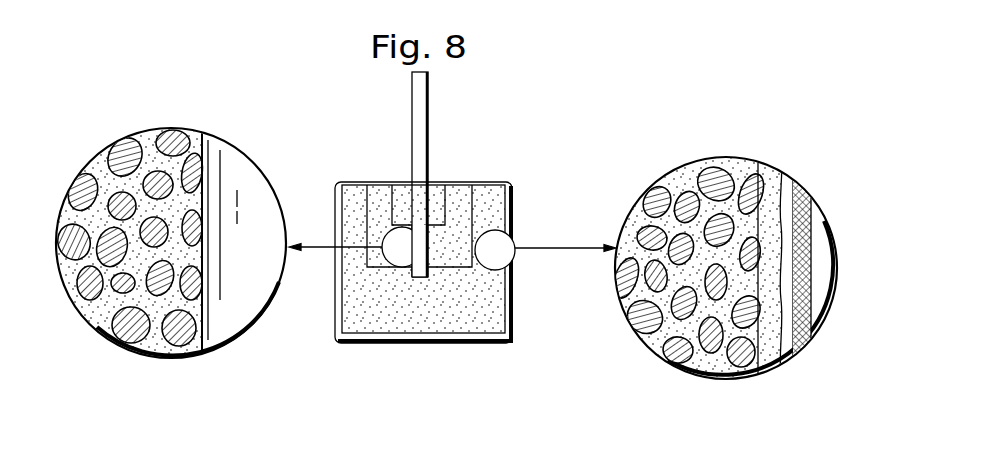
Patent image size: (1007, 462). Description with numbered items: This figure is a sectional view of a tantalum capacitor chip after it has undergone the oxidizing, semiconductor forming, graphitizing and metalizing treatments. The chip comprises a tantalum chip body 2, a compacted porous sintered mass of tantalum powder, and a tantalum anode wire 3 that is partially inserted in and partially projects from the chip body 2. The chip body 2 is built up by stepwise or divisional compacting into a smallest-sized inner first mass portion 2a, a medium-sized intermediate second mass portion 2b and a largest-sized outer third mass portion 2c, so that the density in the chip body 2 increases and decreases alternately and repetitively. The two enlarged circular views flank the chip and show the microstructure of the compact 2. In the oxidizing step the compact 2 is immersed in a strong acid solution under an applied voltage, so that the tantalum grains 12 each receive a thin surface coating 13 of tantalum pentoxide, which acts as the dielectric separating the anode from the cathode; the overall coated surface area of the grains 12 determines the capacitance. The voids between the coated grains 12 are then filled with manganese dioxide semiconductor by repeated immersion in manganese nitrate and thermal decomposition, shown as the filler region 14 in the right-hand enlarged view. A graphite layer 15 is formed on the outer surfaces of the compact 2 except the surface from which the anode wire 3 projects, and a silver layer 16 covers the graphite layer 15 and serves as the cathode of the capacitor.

The tantalum chip body 2 is at (336, 195).
The first mass portion 2a is at (405, 193).
The second mass portion 2b is at (453, 217).
The third mass portion 2c is at (490, 213).
The tantalum anode wire 3 is at (240, 305).
The tantalum grains 12 is at (180, 128).
The surface coating of tantalum pentoxide 13 is at (150, 128).
The intermediate layer 14 is at (653, 350).
The graphite layer 15 is at (789, 363).
The silver layer 16 is at (810, 357).